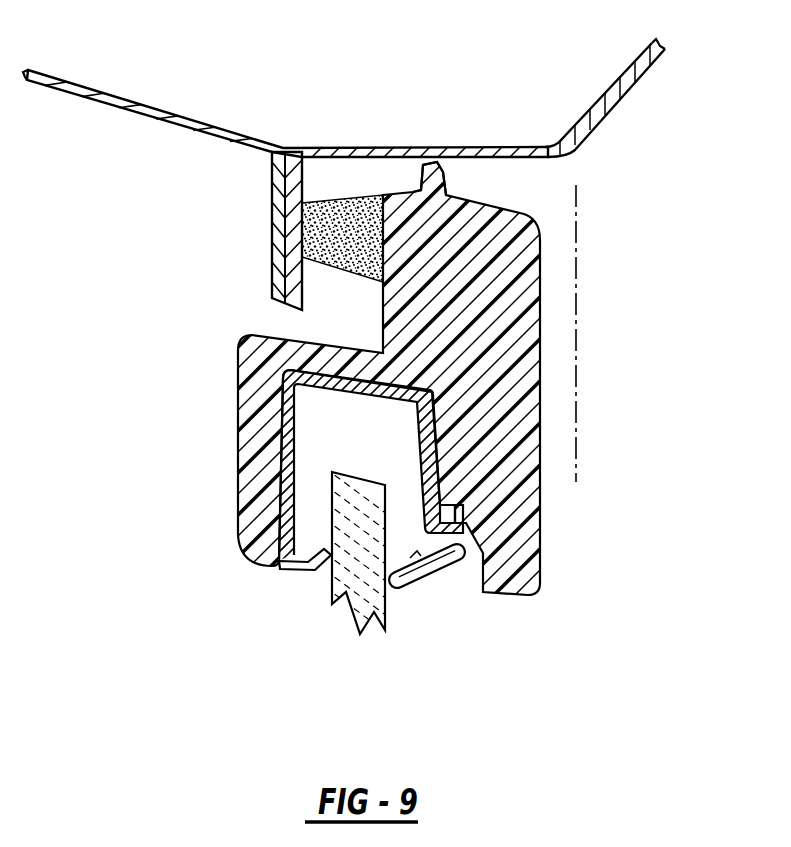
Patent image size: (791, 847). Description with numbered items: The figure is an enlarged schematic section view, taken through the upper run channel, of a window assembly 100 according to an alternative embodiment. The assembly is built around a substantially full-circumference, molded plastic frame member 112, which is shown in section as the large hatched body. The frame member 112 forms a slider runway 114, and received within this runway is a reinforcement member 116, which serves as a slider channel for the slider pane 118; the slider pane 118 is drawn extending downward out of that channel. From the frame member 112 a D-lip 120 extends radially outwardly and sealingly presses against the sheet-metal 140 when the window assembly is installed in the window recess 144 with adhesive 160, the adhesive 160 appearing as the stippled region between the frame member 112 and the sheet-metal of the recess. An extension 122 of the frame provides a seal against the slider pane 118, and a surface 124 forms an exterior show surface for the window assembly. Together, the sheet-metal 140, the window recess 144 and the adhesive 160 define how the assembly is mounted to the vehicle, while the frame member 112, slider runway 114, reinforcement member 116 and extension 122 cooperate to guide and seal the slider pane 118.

The window assembly 100 is at (241, 85).
The frame member 112 is at (540, 350).
The slider runway 114 is at (283, 405).
The reinforcement member 116 is at (297, 570).
The slider pane 118 is at (368, 600).
The D-lip 120 is at (437, 173).
The extension 122 is at (440, 563).
The surface 124 is at (458, 513).
The sheet-metal 140 is at (613, 107).
The window recess 144 is at (313, 272).
The adhesive 160 is at (337, 263).